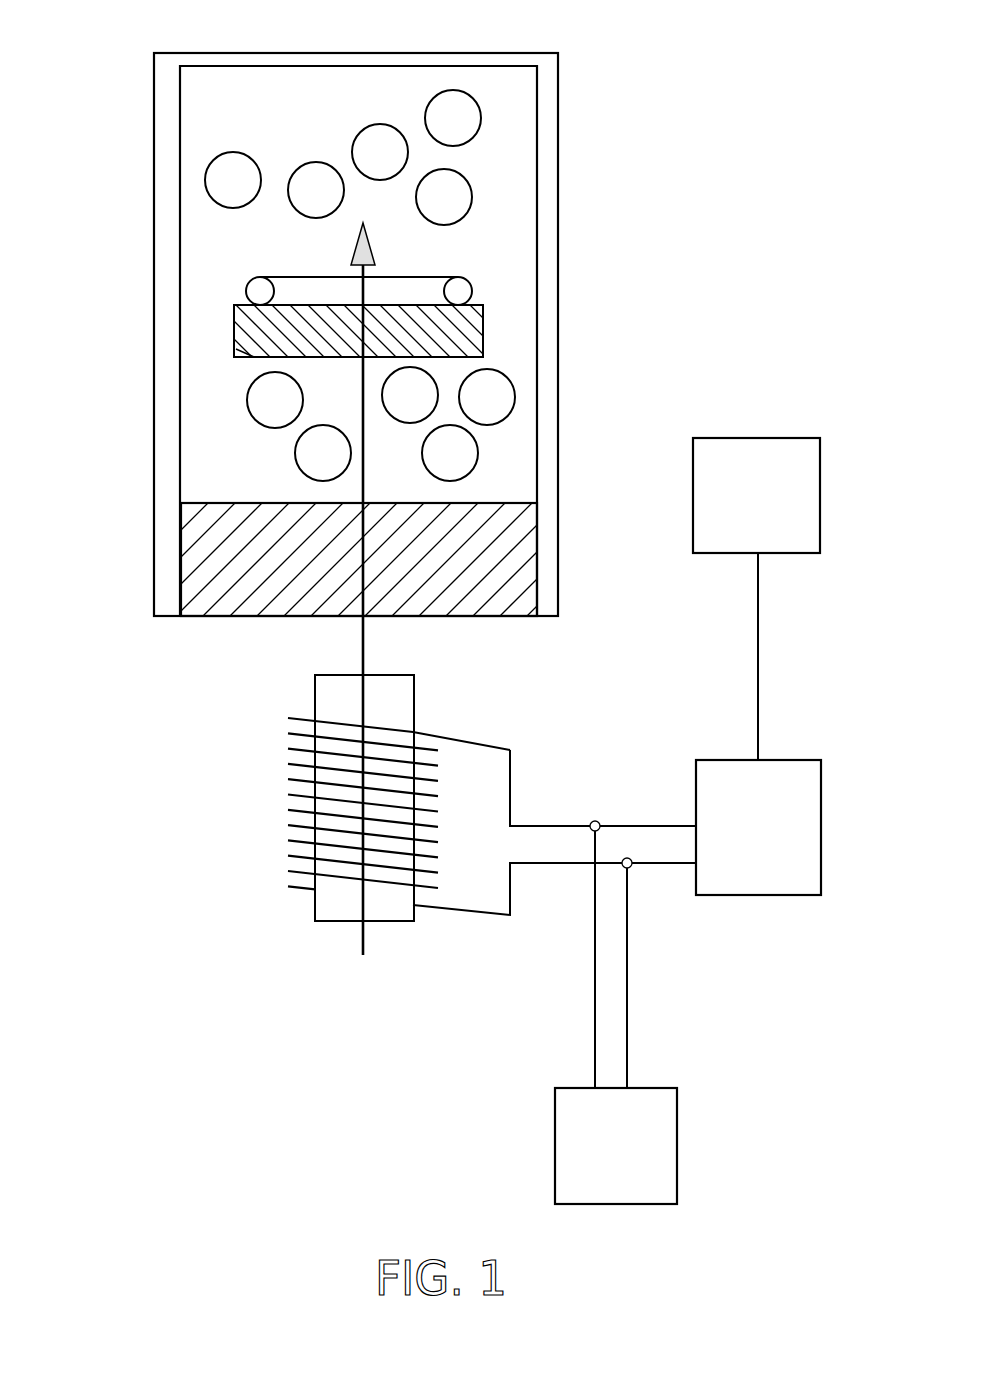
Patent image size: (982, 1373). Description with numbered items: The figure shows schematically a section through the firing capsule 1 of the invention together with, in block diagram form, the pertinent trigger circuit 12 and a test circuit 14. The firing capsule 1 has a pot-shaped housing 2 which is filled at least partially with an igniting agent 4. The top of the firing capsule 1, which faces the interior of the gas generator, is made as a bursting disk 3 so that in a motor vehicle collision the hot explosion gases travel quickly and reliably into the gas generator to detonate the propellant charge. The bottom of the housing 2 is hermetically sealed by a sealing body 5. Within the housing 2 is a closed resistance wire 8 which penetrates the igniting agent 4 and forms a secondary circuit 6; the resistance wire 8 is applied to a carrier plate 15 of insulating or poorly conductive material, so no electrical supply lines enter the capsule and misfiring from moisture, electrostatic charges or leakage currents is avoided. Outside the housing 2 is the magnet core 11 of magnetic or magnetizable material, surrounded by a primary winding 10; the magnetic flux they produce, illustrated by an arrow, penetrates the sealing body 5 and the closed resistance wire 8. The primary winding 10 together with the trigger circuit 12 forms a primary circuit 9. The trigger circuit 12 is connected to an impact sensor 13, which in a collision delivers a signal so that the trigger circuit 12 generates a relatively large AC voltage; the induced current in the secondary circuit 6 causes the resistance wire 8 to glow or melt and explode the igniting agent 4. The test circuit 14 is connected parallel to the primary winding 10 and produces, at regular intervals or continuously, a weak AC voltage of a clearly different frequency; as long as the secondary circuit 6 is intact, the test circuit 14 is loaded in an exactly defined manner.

The firing capsule 1 is at (577, 145).
The housing 2 is at (548, 332).
The bursting disk 3 is at (253, 53).
The igniting agent 4 is at (352, 146).
The sealing body 5 is at (240, 617).
The secondary circuit 6 is at (205, 328).
The resistance wire 8 is at (472, 288).
The primary circuit 9 is at (457, 849).
The primary winding 10 is at (283, 840).
The magnet core 11 is at (315, 921).
The trigger circuit 12 is at (738, 844).
The impact sensor 13 is at (738, 509).
The test circuit 14 is at (593, 1162).
The carrier plate 15 is at (247, 357).